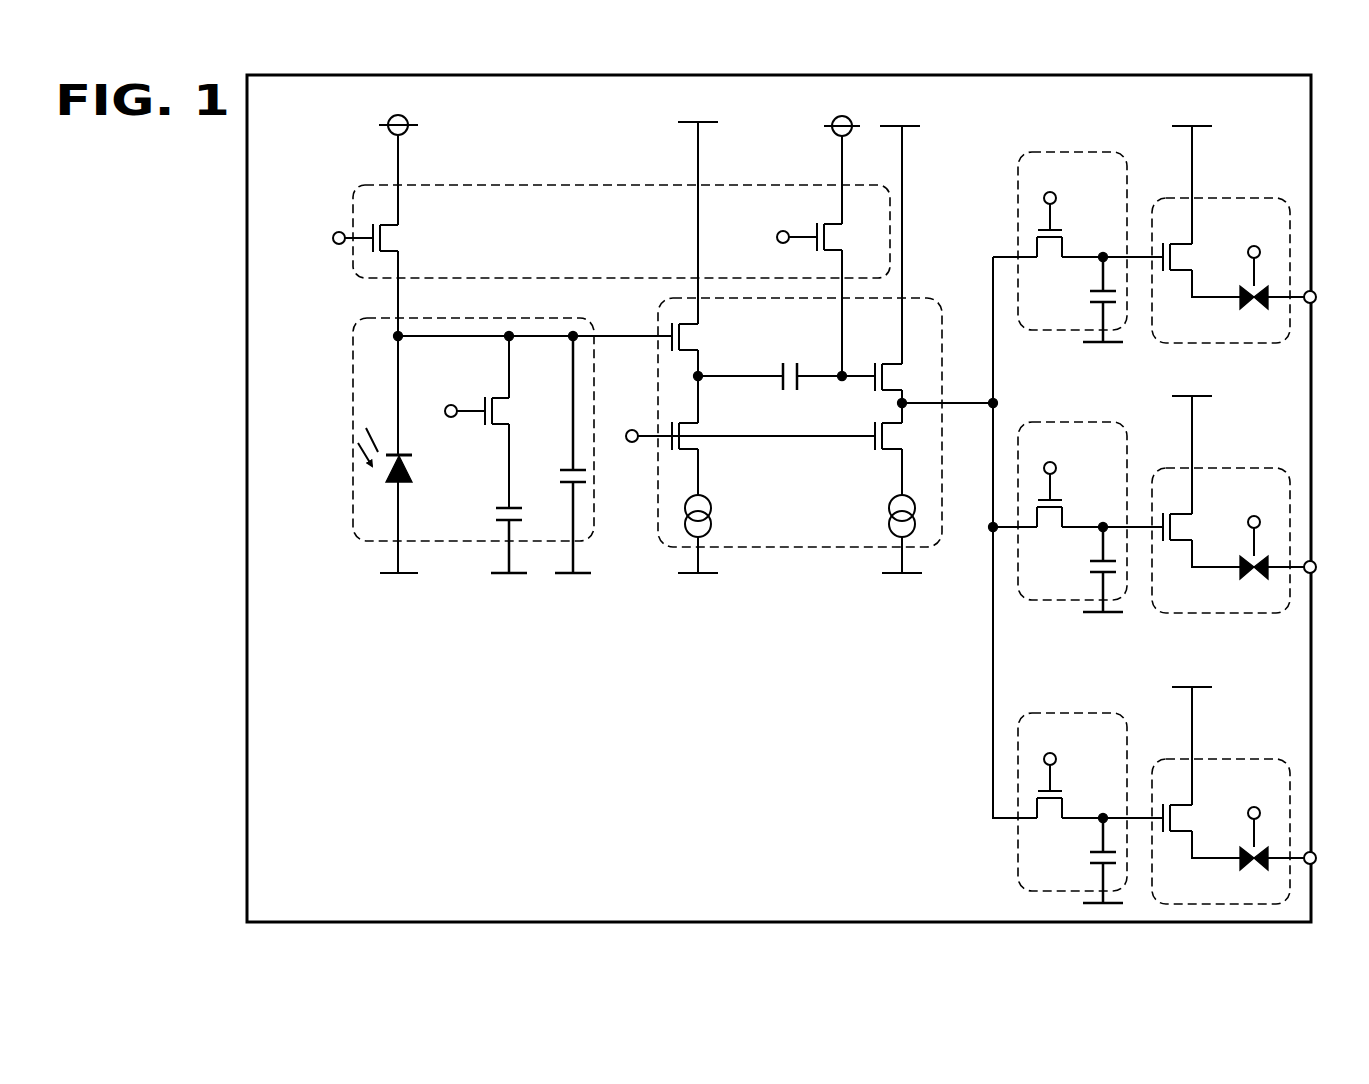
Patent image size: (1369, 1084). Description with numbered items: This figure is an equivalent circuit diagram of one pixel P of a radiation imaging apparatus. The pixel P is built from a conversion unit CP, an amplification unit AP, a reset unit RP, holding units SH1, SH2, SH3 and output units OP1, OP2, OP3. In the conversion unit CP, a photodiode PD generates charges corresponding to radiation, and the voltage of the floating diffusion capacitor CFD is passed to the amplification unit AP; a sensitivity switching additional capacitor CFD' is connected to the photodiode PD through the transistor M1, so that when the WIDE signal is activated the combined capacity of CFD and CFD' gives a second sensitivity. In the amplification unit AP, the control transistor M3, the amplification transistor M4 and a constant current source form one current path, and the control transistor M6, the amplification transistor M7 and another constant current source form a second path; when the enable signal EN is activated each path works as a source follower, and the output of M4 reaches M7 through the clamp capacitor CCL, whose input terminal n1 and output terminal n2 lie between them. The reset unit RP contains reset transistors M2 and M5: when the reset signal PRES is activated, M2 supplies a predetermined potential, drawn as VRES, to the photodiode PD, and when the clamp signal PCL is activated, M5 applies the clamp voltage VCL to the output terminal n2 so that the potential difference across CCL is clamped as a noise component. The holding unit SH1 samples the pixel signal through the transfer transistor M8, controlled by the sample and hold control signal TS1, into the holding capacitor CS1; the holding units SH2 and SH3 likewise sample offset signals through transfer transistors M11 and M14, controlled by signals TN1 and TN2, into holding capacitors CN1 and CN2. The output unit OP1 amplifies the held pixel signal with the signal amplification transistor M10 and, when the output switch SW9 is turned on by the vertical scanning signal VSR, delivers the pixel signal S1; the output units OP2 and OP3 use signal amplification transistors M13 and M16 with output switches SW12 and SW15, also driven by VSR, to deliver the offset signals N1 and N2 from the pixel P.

The pixel P is at (247, 690).
The reset unit RP is at (540, 185).
The conversion unit CP is at (352, 377).
The amplification unit AP is at (810, 562).
The holding unit SH1 is at (1107, 135).
The holding unit SH2 is at (1107, 405).
The holding unit SH3 is at (1107, 696).
The output unit OP1 is at (1250, 198).
The output unit OP2 is at (1250, 468).
The output unit OP3 is at (1250, 759).
The photodiode PD is at (399, 455).
The transistor M1 is at (511, 422).
The reset transistor M2 is at (400, 280).
The control transistor M3 is at (702, 497).
The amplification transistor M4 is at (700, 337).
The reset transistor M5 is at (845, 300).
The control transistor M6 is at (904, 497).
The amplification transistor M7 is at (904, 378).
The transfer transistor M8 is at (1078, 257).
The output switch SW9 is at (1268, 312).
The signal amplification transistor M10 is at (1201, 270).
The transfer transistor M11 is at (1078, 527).
The output switch SW12 is at (1265, 582).
The signal amplification transistor M13 is at (1201, 540).
The transfer transistor M14 is at (1078, 818).
The output switch SW15 is at (1265, 873).
The signal amplification transistor M16 is at (1201, 831).
The floating diffusion capacitor CFD is at (559, 454).
The sensitivity switching additional capacitor CFD' is at (493, 525).
The clamp capacitor CCL is at (790, 391).
The holding capacitor CS1 is at (1086, 299).
The holding capacitor CN1 is at (1086, 569).
The holding capacitor CN2 is at (1086, 860).
The input terminal n1 is at (768, 375).
The output terminal n2 is at (822, 375).
The reset voltage terminal VRES is at (398, 156).
The clamp voltage VCL is at (843, 156).
The reset signal PRES is at (320, 238).
The WIDE signal WIDE is at (454, 394).
The enable signal EN is at (747, 421).
The clamp signal PCL is at (774, 237).
The sample and hold control signal TS1 is at (1049, 196).
The sample and hold control signal TN1 is at (1050, 466).
The sample and hold control signal TN2 is at (1050, 757).
The vertical scanning signal VSR is at (1254, 250).
The pixel signal S1 is at (1324, 296).
The offset signal N1 is at (1326, 566).
The offset signal N2 is at (1326, 857).